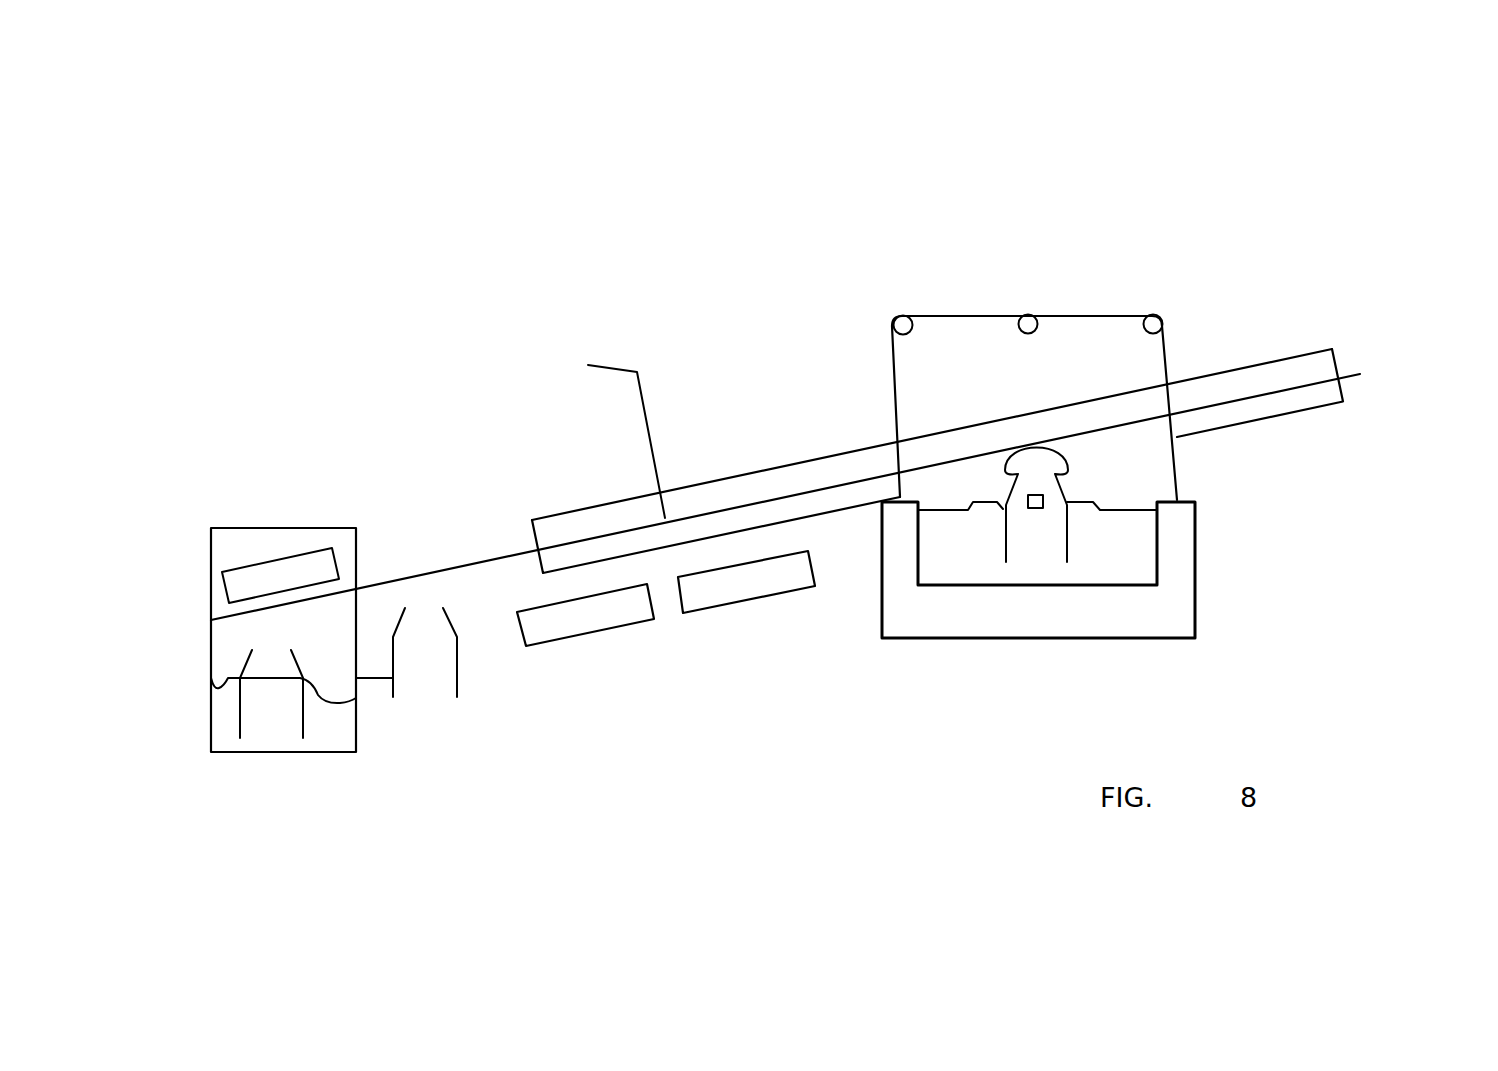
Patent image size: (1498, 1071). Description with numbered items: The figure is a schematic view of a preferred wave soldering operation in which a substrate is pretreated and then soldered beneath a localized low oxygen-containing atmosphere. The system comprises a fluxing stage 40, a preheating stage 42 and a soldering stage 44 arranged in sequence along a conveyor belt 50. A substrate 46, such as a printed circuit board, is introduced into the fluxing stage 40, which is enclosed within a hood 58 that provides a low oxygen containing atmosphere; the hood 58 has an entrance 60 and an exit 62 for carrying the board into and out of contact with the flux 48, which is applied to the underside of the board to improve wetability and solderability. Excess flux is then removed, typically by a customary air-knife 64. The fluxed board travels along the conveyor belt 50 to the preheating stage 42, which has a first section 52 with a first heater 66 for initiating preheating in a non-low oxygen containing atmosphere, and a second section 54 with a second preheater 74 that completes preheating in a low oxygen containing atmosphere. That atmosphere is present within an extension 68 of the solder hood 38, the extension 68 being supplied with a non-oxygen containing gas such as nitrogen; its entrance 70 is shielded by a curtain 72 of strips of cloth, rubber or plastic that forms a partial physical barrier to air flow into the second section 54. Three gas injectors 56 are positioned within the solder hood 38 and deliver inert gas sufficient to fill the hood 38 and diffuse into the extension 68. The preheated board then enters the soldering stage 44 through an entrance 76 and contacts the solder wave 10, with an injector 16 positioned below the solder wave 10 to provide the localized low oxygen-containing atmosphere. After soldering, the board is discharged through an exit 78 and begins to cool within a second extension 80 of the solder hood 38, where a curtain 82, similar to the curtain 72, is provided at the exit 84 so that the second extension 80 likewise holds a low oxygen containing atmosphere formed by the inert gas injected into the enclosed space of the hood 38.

The solder wave 10 is at (1067, 465).
The injector 16 is at (1033, 510).
The hood 38 is at (1034, 356).
The fluxing stage 40 is at (316, 575).
The preheating stage 42 is at (886, 518).
The soldering stage 44 is at (1179, 408).
The substrate 46 is at (282, 572).
The flux 48 is at (333, 735).
The conveyor belt 50 is at (440, 565).
The first section 52 is at (571, 689).
The second section 54 is at (776, 653).
The gas injectors 56 is at (1024, 316).
The hood 58 is at (270, 637).
The entrance 60 is at (211, 614).
The exit 62 is at (357, 588).
The air-knife 64 is at (420, 693).
The first heater 66 is at (586, 639).
The extension 68 is at (717, 483).
The entrance 70 is at (527, 505).
The curtain 72 is at (537, 542).
The second preheater 74 is at (751, 612).
The entrance 76 is at (892, 461).
The exit 78 is at (1170, 396).
The second extension 80 is at (1238, 428).
The curtain 82 is at (1333, 350).
The exit 84 is at (1362, 401).